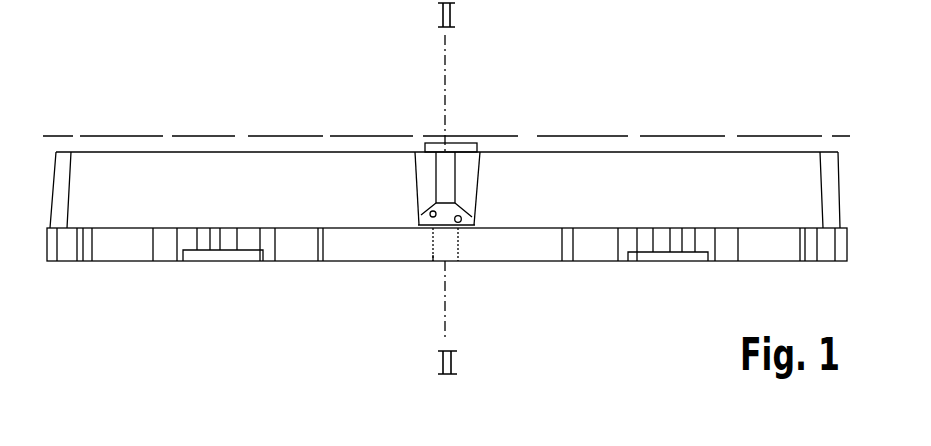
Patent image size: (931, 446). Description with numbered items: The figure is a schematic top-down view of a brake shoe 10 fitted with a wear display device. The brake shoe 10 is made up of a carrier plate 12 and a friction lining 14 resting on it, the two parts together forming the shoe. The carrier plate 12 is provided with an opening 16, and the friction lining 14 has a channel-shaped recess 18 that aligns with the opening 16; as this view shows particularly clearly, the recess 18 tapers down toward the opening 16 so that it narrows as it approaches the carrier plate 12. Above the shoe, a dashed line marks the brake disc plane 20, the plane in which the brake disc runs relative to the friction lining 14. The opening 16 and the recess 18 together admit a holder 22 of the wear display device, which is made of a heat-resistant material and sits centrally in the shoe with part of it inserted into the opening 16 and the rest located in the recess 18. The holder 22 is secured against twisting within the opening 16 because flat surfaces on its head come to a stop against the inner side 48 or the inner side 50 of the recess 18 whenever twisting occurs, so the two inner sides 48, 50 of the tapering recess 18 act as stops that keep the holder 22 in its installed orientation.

The brake shoe 10 is at (628, 323).
The carrier plate 12 is at (595, 250).
The friction lining 14 is at (673, 195).
The opening 16 is at (449, 246).
The channel-shaped recess 18 is at (460, 165).
The brake disc plane 20 is at (648, 136).
The holder 22 is at (437, 264).
The inner side of recess 48 is at (418, 166).
The inner side of recess 50 is at (476, 166).